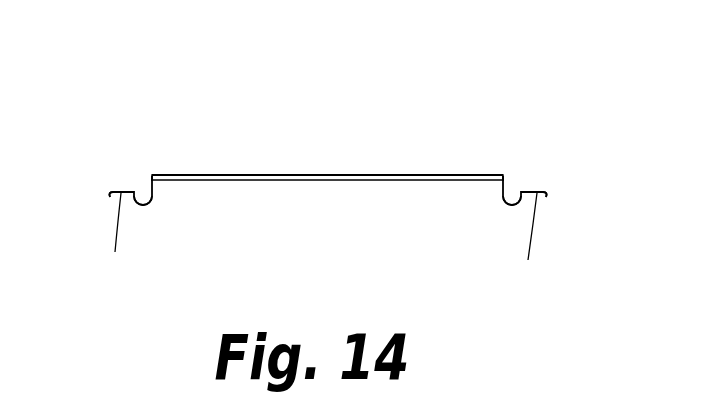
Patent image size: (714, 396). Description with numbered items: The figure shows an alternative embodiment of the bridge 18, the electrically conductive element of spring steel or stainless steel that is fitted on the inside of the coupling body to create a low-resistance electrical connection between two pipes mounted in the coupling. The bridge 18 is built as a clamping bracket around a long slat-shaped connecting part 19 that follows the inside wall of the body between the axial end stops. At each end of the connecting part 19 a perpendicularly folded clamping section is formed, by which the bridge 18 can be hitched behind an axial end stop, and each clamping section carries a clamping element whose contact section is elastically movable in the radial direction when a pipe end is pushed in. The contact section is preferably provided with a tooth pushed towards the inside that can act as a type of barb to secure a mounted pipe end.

The bridge 18 is at (313, 121).
The connecting part 19 is at (335, 176).